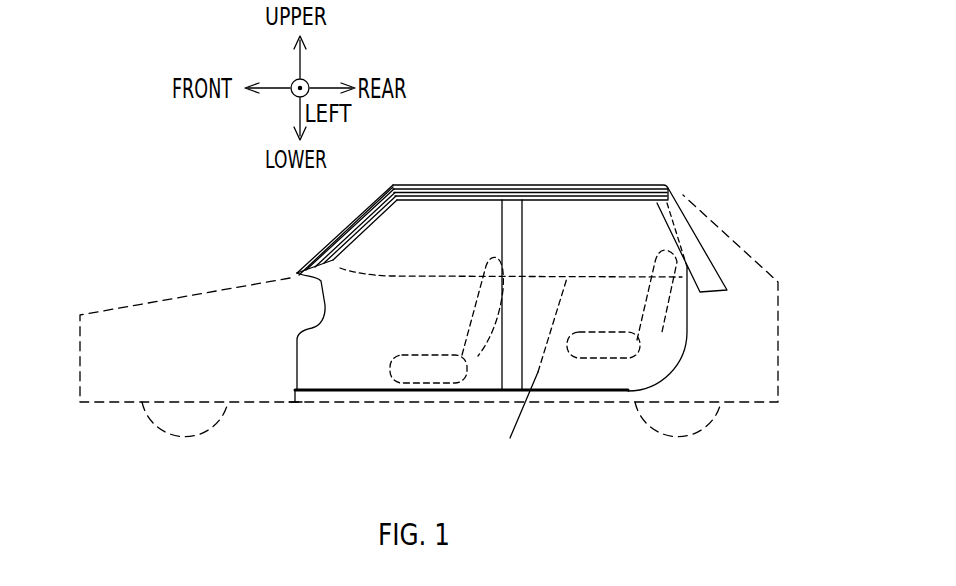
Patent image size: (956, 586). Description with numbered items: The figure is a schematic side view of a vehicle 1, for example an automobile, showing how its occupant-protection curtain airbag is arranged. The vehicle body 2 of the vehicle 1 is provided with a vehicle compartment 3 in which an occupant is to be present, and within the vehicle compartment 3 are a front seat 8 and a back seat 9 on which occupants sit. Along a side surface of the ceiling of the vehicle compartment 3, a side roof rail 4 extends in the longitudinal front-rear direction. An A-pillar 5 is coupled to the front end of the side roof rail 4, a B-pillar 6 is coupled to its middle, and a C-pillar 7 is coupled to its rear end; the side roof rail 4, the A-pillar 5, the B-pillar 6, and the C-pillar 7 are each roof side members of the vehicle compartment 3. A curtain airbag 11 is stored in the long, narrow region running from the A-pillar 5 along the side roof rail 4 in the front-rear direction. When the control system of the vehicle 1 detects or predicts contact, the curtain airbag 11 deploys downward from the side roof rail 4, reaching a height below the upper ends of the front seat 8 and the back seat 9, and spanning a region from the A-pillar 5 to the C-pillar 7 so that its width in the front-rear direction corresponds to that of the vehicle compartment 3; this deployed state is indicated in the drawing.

The vehicle 1 is at (214, 216).
The vehicle body 2 is at (160, 298).
The vehicle compartment 3 is at (360, 391).
The side roof rail 4 is at (467, 185).
The A-pillar 5 is at (313, 262).
The B-pillar 6 is at (527, 238).
The C-pillar 7 is at (707, 252).
The front seat 8 is at (422, 372).
The back seat 9 is at (622, 350).
The curtain airbag 11 is at (570, 185).